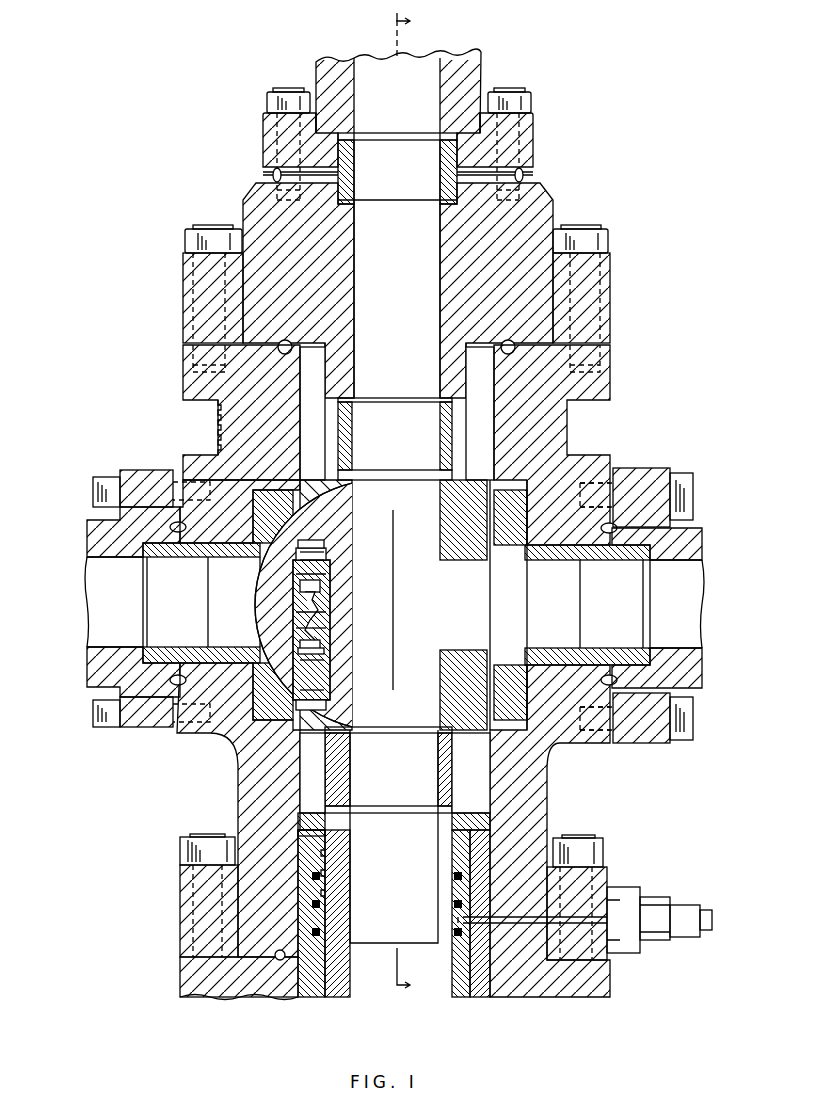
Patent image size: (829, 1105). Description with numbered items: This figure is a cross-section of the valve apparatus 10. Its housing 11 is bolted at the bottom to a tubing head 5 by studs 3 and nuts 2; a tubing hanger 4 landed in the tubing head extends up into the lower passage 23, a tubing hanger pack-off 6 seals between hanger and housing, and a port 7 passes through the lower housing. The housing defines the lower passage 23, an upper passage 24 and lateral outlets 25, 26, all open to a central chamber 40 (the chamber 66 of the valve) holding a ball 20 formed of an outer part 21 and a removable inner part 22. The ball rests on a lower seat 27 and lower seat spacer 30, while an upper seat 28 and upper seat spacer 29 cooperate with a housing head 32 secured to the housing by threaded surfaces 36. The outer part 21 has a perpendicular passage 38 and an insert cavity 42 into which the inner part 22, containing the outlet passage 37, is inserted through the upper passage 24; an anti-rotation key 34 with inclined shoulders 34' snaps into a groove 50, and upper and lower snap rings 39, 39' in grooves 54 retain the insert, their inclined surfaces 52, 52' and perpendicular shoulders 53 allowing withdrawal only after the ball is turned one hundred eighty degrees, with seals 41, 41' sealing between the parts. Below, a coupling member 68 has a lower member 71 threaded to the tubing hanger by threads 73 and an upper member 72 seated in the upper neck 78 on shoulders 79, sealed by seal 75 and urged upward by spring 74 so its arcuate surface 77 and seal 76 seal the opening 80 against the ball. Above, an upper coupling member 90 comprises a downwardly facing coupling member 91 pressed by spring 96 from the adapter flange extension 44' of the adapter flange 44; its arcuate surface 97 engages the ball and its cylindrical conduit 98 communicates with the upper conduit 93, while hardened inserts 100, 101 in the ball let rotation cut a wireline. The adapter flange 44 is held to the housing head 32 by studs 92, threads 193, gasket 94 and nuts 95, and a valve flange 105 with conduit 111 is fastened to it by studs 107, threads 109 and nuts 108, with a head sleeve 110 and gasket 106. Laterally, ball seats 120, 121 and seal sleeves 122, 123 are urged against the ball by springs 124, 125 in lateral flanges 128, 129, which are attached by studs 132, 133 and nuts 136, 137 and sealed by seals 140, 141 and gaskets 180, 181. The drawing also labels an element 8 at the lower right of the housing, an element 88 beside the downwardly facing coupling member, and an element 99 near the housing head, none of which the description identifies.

The nuts 2 is at (146, 848).
The studs 3 is at (182, 898).
The tubing hanger 4 is at (335, 997).
The tubing head 5 is at (240, 997).
The tubing hanger pack-off 6 is at (306, 997).
The port 7 is at (600, 880).
The right lower sleeve 8 is at (480, 997).
The valve apparatus 10 is at (665, 384).
The housing 11 is at (548, 800).
The ball 20 is at (475, 462).
The outer part of the ball 21 is at (510, 560).
The inner part of the ball 22 is at (458, 560).
The lower passage 23 is at (548, 765).
The upper passage 24 is at (500, 398).
The first lateral outlet 25 is at (566, 607).
The second lateral outlet 26 is at (266, 598).
The lower seat 27 is at (530, 698).
The upper seat 28 is at (530, 524).
The upper seat spacer 29 is at (559, 477).
The lower seat spacer 30 is at (511, 747).
The housing head 32 is at (235, 414).
The anti-rotation key 34 is at (336, 627).
The inclined shoulders 34' is at (270, 637).
The threaded surfaces 36 is at (580, 420).
The outlet passage 37 is at (470, 607).
The perpendicular passage 38 is at (520, 607).
The upper snap ring 39 is at (340, 536).
The lower snap ring 39' is at (342, 657).
The central chamber 40 is at (396, 572).
The seal 41 is at (338, 523).
The seal 41' is at (340, 697).
The insert cavity 42 is at (240, 505).
The adapter flange 44 is at (432, 290).
The adapter flange extension 44' is at (397, 413).
The groove 50 is at (290, 585).
The inclined surface 52 is at (340, 548).
The inclined surface 52' is at (342, 678).
The perpendicular shoulders 53 is at (312, 544).
The grooves 54 is at (258, 522).
The chamber 66 is at (430, 633).
The coupling member 68 is at (292, 793).
The lower coupling member 71 is at (352, 836).
The upper coupling member 72 is at (350, 753).
The complementary threads 73 is at (352, 880).
The spring 74 is at (352, 808).
The seal 75 is at (340, 786).
The seal 76 is at (311, 781).
The upwardly facing arcuately shaped surface 77 is at (472, 779).
The upper neck 78 is at (470, 808).
The upwardly facing shoulders 79 is at (475, 790).
The opening 80 is at (422, 771).
The sleeve 88 is at (352, 432).
The upper coupling member 90 is at (318, 448).
The downwardly facing coupling member 91 is at (352, 446).
The studs 92 is at (197, 299).
The upper conduit 93 is at (438, 342).
The gasket 94 is at (288, 340).
The nuts 95 is at (185, 238).
The spring 96 is at (440, 398).
The downwardly facing arcuately shaped surface 97 is at (470, 480).
The cylindrical conduit 98 is at (422, 441).
The gap 99 is at (338, 478).
The insert 100 is at (370, 470).
The insert 101 is at (355, 727).
The valve flange 105 is at (468, 60).
The gasket 106 is at (440, 182).
The threaded studs 107 is at (268, 140).
The nuts 108 is at (268, 98).
The threads 109 is at (263, 180).
The head sleeve 110 is at (440, 157).
The conduit 111 is at (438, 99).
The lateral ball seat 120 is at (548, 648).
The lateral ball seat 121 is at (198, 636).
The seal sleeve 122 is at (605, 648).
The seal sleeve 123 is at (185, 647).
The spring 124 is at (648, 650).
The spring 125 is at (143, 640).
The lateral flange 128 is at (690, 552).
The lateral flange 129 is at (92, 530).
The threaded stud 132 is at (638, 468).
The threaded stud 133 is at (147, 470).
The nut 136 is at (684, 473).
The nut 137 is at (100, 477).
The seal 140 is at (532, 562).
The seal 141 is at (170, 680).
The gasket 180 is at (690, 530).
The gasket 181 is at (170, 678).
The threads 193 is at (183, 364).